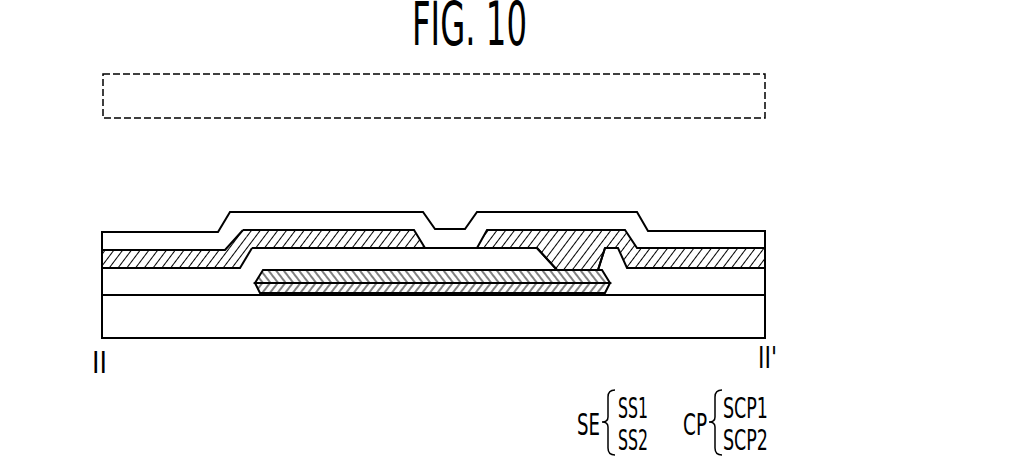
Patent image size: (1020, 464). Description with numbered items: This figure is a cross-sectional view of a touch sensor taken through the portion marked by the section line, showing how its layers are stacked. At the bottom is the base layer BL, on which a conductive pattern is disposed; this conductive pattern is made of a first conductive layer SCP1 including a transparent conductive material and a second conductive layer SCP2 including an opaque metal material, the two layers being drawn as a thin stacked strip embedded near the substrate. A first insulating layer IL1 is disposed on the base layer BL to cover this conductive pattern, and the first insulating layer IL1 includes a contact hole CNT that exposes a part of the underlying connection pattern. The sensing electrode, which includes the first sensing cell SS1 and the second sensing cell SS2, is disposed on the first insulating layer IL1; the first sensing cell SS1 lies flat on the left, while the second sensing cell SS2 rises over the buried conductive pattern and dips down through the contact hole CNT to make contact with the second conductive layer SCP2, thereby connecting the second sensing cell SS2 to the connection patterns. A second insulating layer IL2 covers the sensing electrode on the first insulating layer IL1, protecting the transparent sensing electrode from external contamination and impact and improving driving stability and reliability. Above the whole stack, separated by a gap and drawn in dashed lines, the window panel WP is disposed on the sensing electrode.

The window panel WP is at (763, 96).
The base layer BL is at (760, 318).
The first insulating layer IL1 is at (760, 283).
The second insulating layer IL2 is at (762, 242).
The first sensing cell SS1 is at (102, 263).
The second sensing cell SS2 is at (762, 262).
The first conductive layer SCP1 is at (290, 290).
The second conductive layer SCP2 is at (337, 275).
The contact hole CNT is at (541, 258).